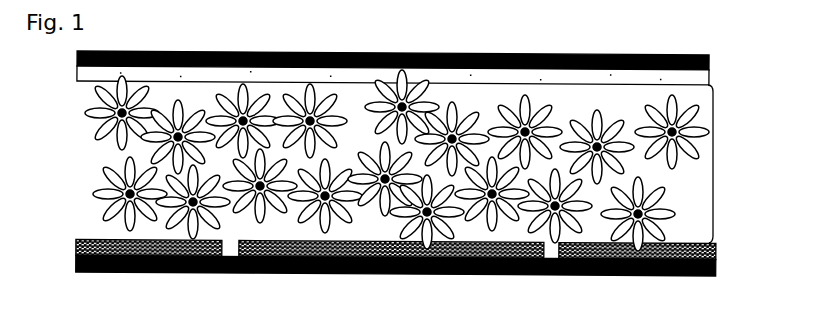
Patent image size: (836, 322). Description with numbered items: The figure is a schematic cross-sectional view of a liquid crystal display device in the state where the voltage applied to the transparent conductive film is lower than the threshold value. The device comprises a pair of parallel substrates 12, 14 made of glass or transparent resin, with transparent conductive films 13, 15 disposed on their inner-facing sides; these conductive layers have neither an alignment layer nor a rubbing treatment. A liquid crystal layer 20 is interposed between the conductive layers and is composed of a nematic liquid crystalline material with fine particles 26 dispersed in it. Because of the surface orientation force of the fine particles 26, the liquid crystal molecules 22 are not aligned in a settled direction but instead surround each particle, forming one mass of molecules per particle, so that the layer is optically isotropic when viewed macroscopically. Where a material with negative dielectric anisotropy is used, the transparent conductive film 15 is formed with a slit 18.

The substrate 12 is at (709, 60).
The transparent conductive film 13 is at (709, 80).
The substrate 14 is at (717, 270).
The transparent conductive film 15 is at (717, 247).
The slit 18 is at (551, 248).
The liquid crystal layer 20 is at (714, 165).
The liquid crystal molecules 22 is at (689, 133).
The fine particles 26 is at (655, 210).